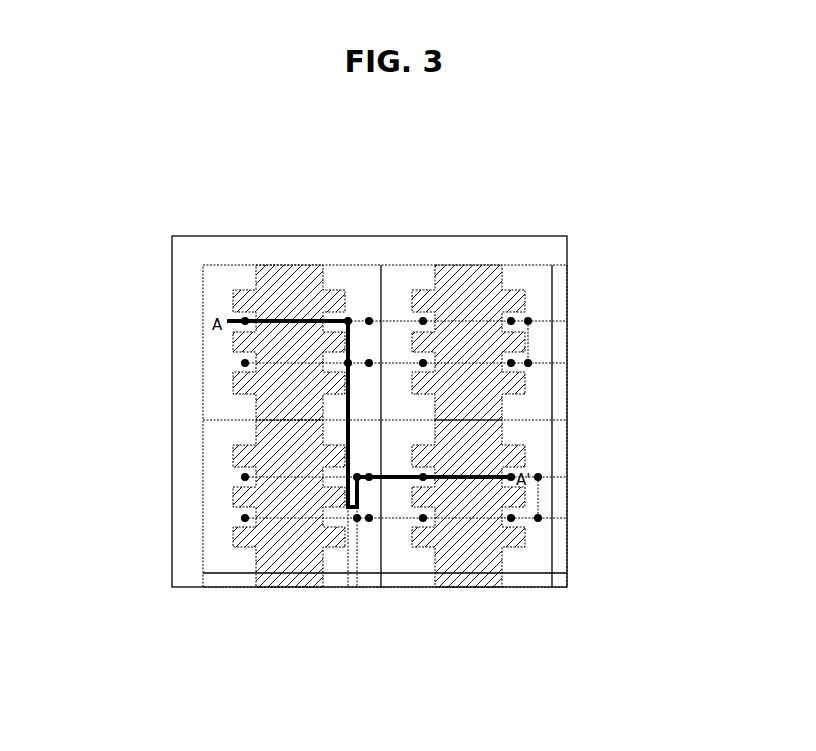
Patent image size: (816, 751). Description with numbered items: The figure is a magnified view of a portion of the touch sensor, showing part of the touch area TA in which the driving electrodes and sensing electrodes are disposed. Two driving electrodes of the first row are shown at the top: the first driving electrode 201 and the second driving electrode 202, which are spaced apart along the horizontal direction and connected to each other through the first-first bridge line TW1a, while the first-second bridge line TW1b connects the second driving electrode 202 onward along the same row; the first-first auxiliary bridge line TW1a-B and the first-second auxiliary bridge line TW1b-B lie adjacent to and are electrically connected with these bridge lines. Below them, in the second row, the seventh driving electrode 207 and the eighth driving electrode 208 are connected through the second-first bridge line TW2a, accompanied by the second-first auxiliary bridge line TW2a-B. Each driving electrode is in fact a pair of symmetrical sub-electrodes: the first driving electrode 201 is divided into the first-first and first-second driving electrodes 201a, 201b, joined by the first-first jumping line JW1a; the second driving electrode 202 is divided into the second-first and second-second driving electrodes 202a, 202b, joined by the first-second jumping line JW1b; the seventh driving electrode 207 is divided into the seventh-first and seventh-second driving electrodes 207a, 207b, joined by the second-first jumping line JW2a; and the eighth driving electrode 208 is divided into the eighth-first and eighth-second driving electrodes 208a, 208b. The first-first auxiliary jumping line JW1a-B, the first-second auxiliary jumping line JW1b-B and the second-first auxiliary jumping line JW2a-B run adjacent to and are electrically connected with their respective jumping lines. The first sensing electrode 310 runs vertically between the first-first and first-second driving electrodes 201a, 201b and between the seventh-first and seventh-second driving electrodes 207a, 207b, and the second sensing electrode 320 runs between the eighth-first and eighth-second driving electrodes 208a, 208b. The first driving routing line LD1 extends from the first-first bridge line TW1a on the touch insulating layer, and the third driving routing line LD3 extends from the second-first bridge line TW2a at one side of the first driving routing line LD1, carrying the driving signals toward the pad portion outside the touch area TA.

The first driving electrode 201 is at (342, 193).
The first-first driving electrode 201a is at (222, 291).
The first-second driving electrode 201b is at (349, 277).
The second driving electrode 202 is at (532, 192).
The second-first driving electrode 202a is at (420, 275).
The second-second driving electrode 202b is at (521, 275).
The seventh driving electrode 207 is at (97, 433).
The seventh-first driving electrode 207a is at (217, 435).
The seventh-second driving electrode 207b is at (343, 445).
The eighth driving electrode 208 is at (692, 480).
The eighth-first driving electrode 208a is at (407, 432).
The eighth-second driving electrode 208b is at (537, 538).
The first sensing electrode 310 is at (280, 578).
The second sensing electrode 320 is at (470, 560).
The first-first bridge line TW1a is at (375, 308).
The first-first auxiliary bridge line TW1a-B is at (395, 360).
The first-second bridge line TW1b is at (543, 320).
The first-second auxiliary bridge line TW1b-B is at (545, 362).
The second-first bridge line TW2a is at (432, 565).
The second-first auxiliary bridge line TW2a-B is at (393, 521).
The first-first jumping line JW1a is at (272, 318).
The first-first auxiliary jumping line JW1a-B is at (287, 360).
The first-second jumping line JW1b is at (477, 323).
The first-second auxiliary jumping line JW1b-B is at (457, 367).
The second-first jumping line JW2a is at (293, 478).
The second-first auxiliary jumping line JW2a-B is at (288, 517).
The first driving routing line LD1 is at (348, 560).
The third driving routing line LD3 is at (356, 560).
The touch area TA is at (597, 572).